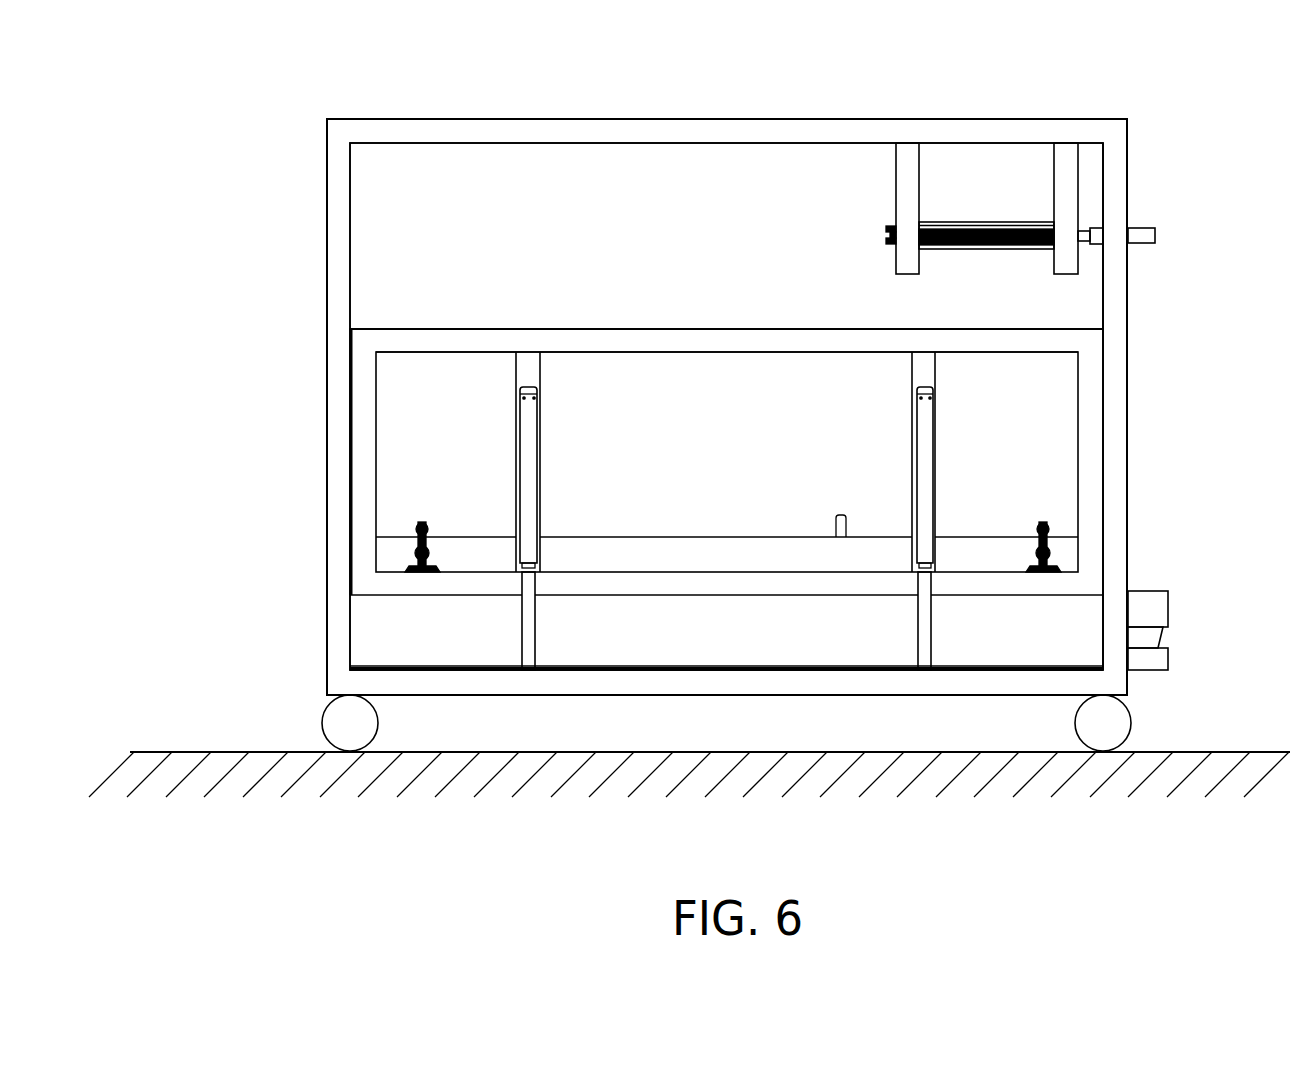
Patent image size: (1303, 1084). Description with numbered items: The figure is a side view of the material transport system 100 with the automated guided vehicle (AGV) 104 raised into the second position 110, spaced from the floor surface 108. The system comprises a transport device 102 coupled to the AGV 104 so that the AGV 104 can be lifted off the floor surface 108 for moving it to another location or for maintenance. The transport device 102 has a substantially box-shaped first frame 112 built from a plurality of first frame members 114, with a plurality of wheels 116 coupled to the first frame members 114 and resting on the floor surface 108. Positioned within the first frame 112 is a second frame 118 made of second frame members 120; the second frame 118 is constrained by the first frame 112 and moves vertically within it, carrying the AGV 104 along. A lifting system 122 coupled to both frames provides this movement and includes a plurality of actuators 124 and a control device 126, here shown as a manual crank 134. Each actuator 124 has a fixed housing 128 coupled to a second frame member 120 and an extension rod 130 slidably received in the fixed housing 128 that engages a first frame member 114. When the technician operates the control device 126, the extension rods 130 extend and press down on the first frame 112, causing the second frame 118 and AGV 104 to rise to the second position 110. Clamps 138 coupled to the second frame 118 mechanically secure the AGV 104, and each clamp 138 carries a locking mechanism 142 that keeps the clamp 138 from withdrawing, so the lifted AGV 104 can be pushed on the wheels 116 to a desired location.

The material transport system 100 is at (282, 121).
The transport device 102 is at (297, 325).
The automated guided vehicle (AGV) 104 is at (740, 645).
The floor surface 108 is at (225, 750).
The second position 110 is at (360, 618).
The first frame 112 is at (297, 230).
The first frame members 114 is at (638, 135).
The wheels 116 is at (358, 730).
The second frame 118 is at (347, 402).
The second frame members 120 is at (925, 372).
The lifting system 122 is at (1143, 190).
The actuators 124 is at (525, 408).
The control device 126 is at (958, 200).
The fixed housing 128 is at (525, 468).
The extension rod 130 is at (525, 635).
The manual crank 134 is at (1143, 227).
The clamps 138 is at (417, 557).
The locking mechanism 142 is at (420, 522).